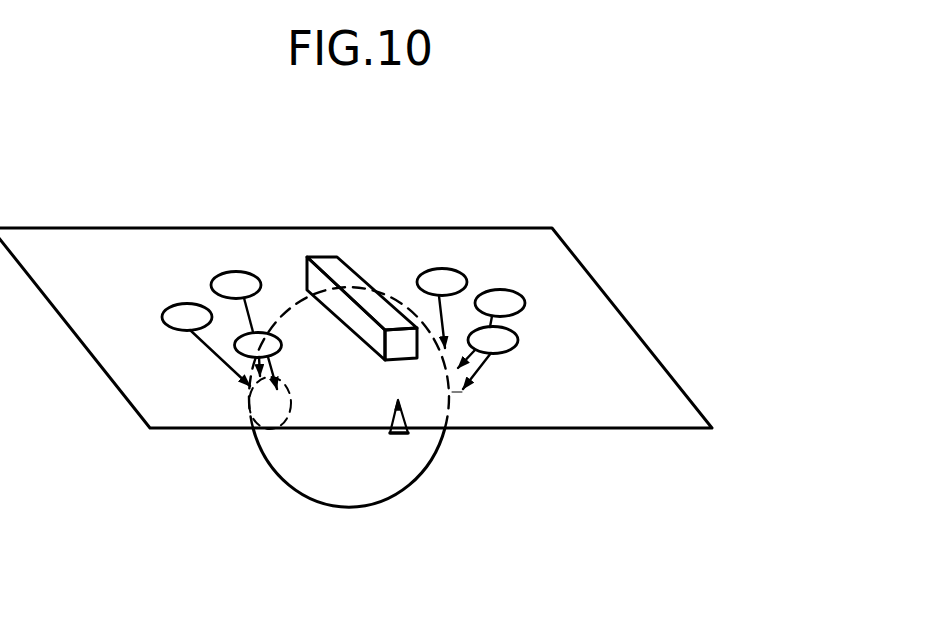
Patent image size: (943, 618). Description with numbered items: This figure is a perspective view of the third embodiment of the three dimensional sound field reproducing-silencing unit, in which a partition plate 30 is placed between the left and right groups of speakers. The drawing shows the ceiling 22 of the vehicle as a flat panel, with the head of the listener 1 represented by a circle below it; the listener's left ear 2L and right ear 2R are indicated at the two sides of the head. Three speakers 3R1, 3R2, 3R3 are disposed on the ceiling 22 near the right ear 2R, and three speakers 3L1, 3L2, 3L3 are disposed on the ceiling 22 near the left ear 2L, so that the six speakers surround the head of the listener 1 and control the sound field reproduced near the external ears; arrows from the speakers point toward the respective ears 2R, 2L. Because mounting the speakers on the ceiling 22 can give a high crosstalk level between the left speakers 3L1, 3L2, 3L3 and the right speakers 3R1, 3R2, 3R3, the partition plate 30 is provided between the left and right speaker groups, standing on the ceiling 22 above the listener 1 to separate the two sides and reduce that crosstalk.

The listener 1 is at (345, 506).
The ceiling 22 is at (672, 393).
The partition plate 30 is at (351, 266).
The right ear 2R is at (275, 426).
The left ear 2L is at (460, 395).
The speaker 3R1 is at (240, 348).
The speaker 3R2 is at (176, 305).
The speaker 3R3 is at (239, 272).
The speaker 3L1 is at (505, 342).
The speaker 3L2 is at (501, 290).
The speaker 3L3 is at (439, 269).